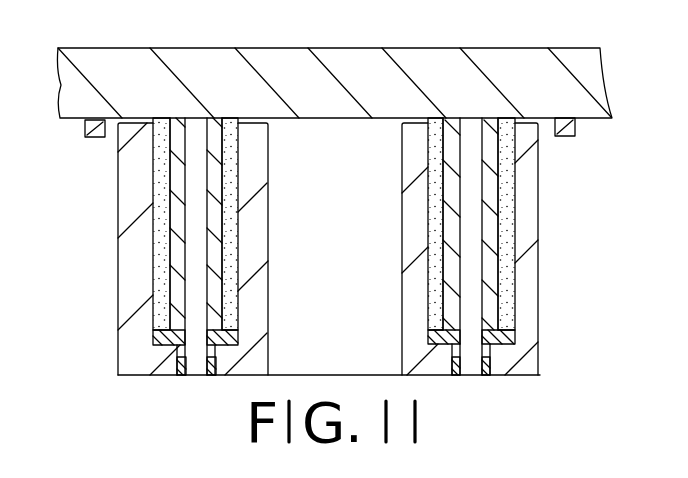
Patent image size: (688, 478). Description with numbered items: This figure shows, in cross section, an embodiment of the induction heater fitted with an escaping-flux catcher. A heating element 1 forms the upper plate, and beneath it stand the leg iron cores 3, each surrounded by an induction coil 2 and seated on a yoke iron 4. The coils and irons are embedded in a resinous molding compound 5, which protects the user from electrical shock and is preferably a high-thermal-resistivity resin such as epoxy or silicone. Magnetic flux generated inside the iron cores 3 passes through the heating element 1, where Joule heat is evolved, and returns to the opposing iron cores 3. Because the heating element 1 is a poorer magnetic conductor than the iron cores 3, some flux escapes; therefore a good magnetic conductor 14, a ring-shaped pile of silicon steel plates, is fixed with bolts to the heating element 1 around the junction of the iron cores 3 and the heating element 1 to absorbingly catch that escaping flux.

The heating element 1 is at (584, 60).
The induction coil 2 is at (513, 220).
The iron core 3 is at (493, 170).
The yoke iron 4 is at (508, 342).
The resinous molding compound 5 is at (530, 290).
The good magnetic conductor 14 is at (84, 137).